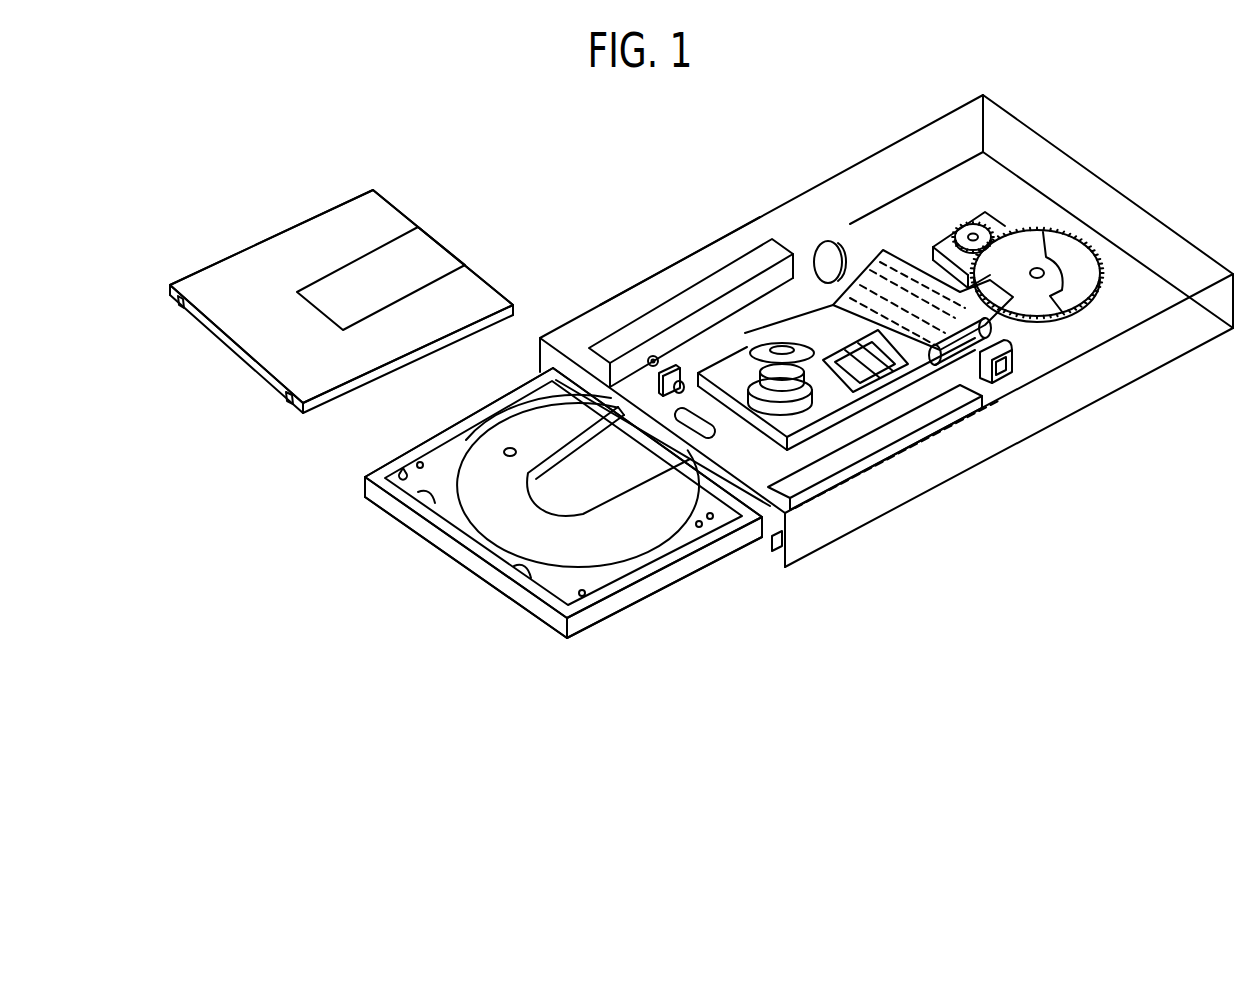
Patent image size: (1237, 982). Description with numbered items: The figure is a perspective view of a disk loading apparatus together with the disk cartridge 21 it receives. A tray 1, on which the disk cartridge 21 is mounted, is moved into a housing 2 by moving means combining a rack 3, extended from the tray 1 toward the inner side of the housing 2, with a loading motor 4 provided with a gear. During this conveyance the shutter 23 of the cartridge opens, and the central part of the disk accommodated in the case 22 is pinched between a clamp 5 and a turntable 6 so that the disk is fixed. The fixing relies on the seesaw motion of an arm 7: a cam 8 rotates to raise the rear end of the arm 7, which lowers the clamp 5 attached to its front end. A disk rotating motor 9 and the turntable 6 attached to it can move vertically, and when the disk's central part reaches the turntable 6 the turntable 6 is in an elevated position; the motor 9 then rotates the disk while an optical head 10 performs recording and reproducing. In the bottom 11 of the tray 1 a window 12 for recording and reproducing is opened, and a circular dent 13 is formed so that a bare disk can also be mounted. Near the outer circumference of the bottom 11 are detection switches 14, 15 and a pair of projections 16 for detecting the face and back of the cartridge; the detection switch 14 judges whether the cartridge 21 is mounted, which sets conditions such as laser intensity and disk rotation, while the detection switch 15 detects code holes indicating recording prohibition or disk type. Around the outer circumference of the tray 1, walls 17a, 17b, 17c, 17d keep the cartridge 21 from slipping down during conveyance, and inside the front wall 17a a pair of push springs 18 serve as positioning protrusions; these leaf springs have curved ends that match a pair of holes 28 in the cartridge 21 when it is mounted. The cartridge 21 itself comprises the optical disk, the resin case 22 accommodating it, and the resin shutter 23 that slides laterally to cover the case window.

The tray 1 is at (567, 660).
The housing 2 is at (1108, 345).
The rack 3 is at (715, 282).
The loading motor 4 is at (653, 357).
The clamp 5 is at (655, 272).
The turntable 6 is at (790, 392).
The arm 7 is at (868, 242).
The cam 8 is at (1082, 260).
The disk rotating motor 9 is at (810, 393).
The optical head 10 is at (857, 378).
The bottom 11 is at (455, 445).
The window 12 is at (582, 498).
The circular dent 13 is at (630, 547).
The detection switch 14 is at (402, 474).
The detection switch 15 is at (698, 527).
The projections 16 is at (422, 462).
The front wall 17a is at (510, 593).
The wall 17b is at (657, 442).
The wall 17c is at (362, 473).
The wall 17d is at (715, 547).
The push springs 18 is at (522, 570).
The disk cartridge 21 is at (352, 180).
The case 22 is at (238, 273).
The shutter 23 is at (358, 280).
The holes 28 is at (183, 300).